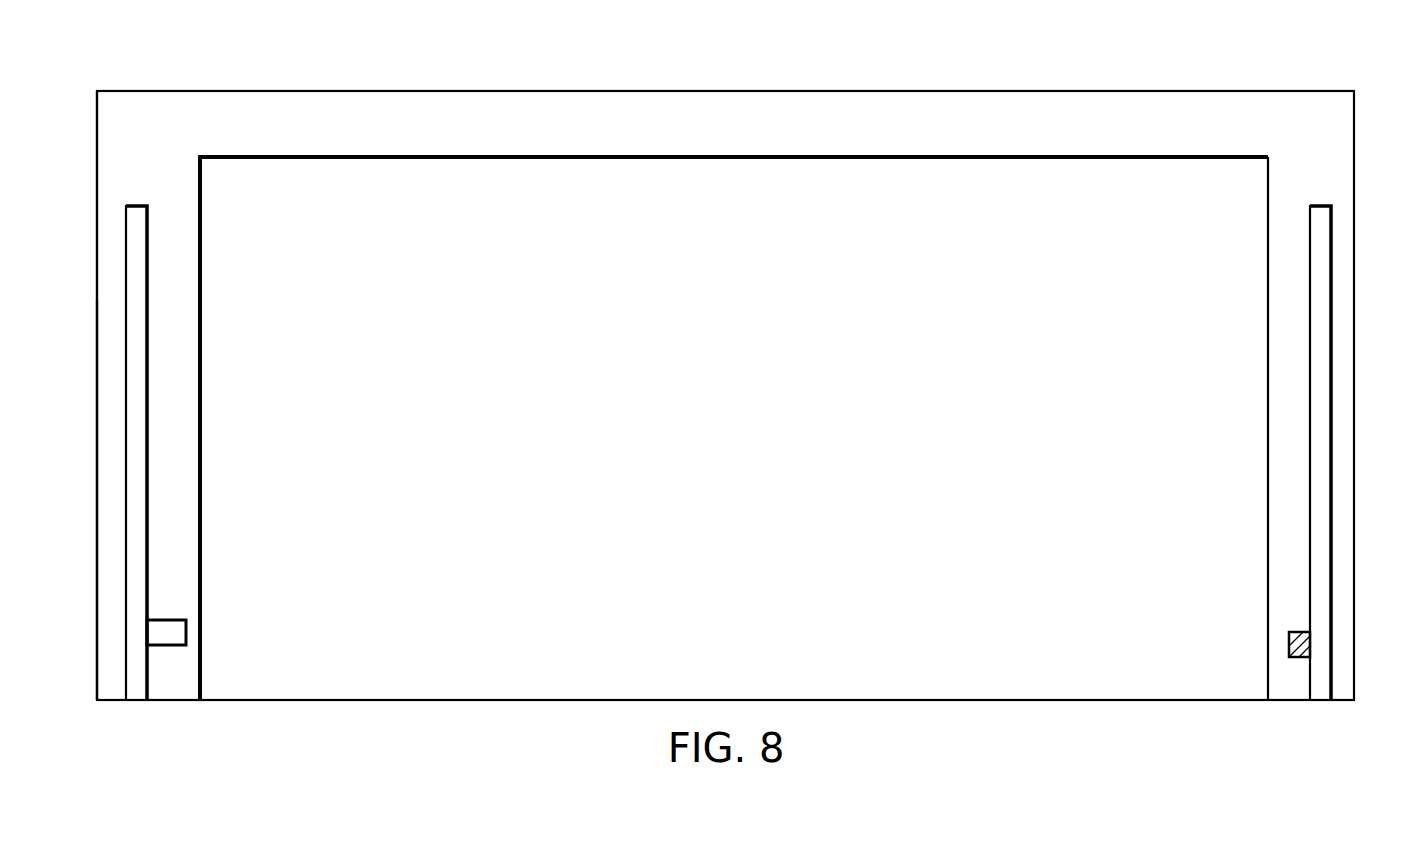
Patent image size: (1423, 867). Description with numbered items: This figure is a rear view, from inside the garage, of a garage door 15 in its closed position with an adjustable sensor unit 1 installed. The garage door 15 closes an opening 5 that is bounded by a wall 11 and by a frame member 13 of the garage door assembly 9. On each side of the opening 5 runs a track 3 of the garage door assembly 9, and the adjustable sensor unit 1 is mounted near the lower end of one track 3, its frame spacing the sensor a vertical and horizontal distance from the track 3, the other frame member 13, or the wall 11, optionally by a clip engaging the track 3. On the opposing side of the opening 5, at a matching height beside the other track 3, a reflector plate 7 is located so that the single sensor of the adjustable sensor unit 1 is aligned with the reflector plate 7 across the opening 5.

The adjustable sensor unit 1 is at (186, 632).
The track 3 is at (135, 275).
The opening 5 is at (388, 190).
The reflector plate 7 is at (1289, 640).
The garage door assembly 9 is at (496, 77).
The wall 11 is at (97, 512).
The frame member 13 is at (105, 157).
The garage door 15 is at (813, 186).